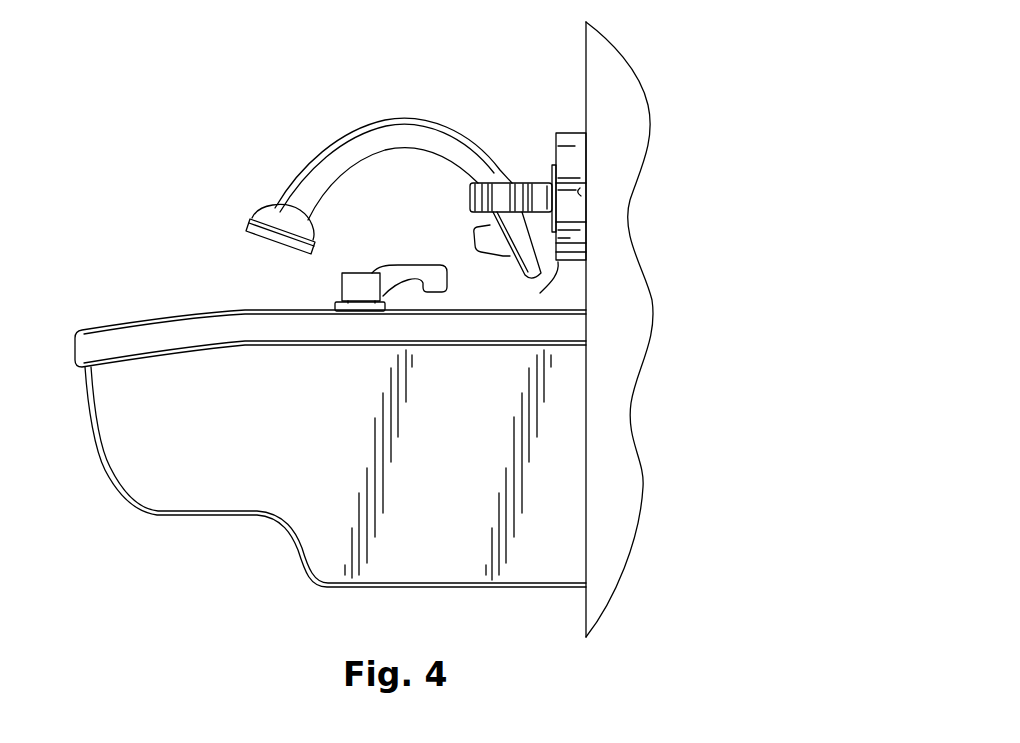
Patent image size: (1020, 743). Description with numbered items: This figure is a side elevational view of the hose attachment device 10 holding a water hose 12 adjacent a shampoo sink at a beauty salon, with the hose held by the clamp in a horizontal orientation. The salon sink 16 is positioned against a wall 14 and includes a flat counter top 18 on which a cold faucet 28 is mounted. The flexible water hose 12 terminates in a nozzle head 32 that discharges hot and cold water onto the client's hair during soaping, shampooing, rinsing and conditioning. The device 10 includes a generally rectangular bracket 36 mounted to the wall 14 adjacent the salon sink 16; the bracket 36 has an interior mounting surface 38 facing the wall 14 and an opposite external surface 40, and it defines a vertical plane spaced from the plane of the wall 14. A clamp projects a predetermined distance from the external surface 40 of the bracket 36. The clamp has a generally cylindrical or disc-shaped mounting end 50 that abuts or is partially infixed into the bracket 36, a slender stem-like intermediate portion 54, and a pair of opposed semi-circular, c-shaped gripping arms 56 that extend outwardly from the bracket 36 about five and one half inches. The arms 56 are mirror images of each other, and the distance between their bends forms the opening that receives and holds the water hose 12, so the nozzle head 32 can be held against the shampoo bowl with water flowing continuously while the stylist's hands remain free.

The hose attachment device 10 is at (540, 102).
The water hose 12 is at (313, 166).
The wall 14 is at (584, 624).
The salon sink 16 is at (87, 418).
The counter top 18 is at (106, 330).
The cold faucet 28 is at (340, 302).
The nozzle head 32 is at (266, 212).
The bracket 36 is at (540, 293).
The interior mounting surface 38 is at (584, 193).
The external surface 40 is at (554, 133).
The mounting end 50 is at (552, 178).
The intermediate portion 54 is at (533, 181).
The gripping arms 56 is at (463, 225).